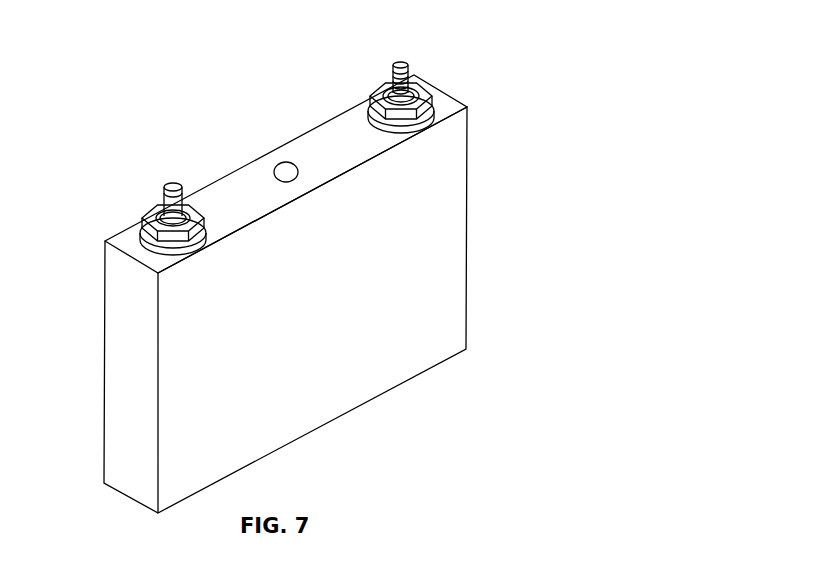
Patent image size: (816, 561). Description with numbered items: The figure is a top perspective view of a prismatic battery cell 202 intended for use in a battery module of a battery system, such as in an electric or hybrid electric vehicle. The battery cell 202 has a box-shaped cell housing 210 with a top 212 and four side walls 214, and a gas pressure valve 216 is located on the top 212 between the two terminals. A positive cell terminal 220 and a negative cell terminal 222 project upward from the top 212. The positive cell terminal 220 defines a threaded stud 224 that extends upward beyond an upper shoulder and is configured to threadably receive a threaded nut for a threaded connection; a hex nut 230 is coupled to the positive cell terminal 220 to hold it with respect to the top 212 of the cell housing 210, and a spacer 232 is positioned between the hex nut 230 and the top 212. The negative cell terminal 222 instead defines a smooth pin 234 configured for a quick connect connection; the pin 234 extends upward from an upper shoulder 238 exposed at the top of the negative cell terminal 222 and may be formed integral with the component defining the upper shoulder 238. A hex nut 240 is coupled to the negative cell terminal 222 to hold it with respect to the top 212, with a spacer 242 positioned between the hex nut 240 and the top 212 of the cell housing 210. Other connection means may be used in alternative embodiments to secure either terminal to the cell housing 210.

The prismatic battery cell 202 is at (208, 120).
The cell housing 210 is at (347, 373).
The top 212 is at (330, 132).
The side walls 214 is at (112, 378).
The gas pressure valve 216 is at (283, 163).
The positive cell terminal 220 is at (403, 55).
The negative cell terminal 222 is at (168, 175).
The threaded stud 224 is at (412, 77).
The hex nut 230 is at (413, 92).
The spacer 232 is at (434, 113).
The smooth pin 234 is at (163, 198).
The upper shoulder 238 is at (147, 208).
The hex nut 240 is at (153, 237).
The flange 242 is at (163, 247).